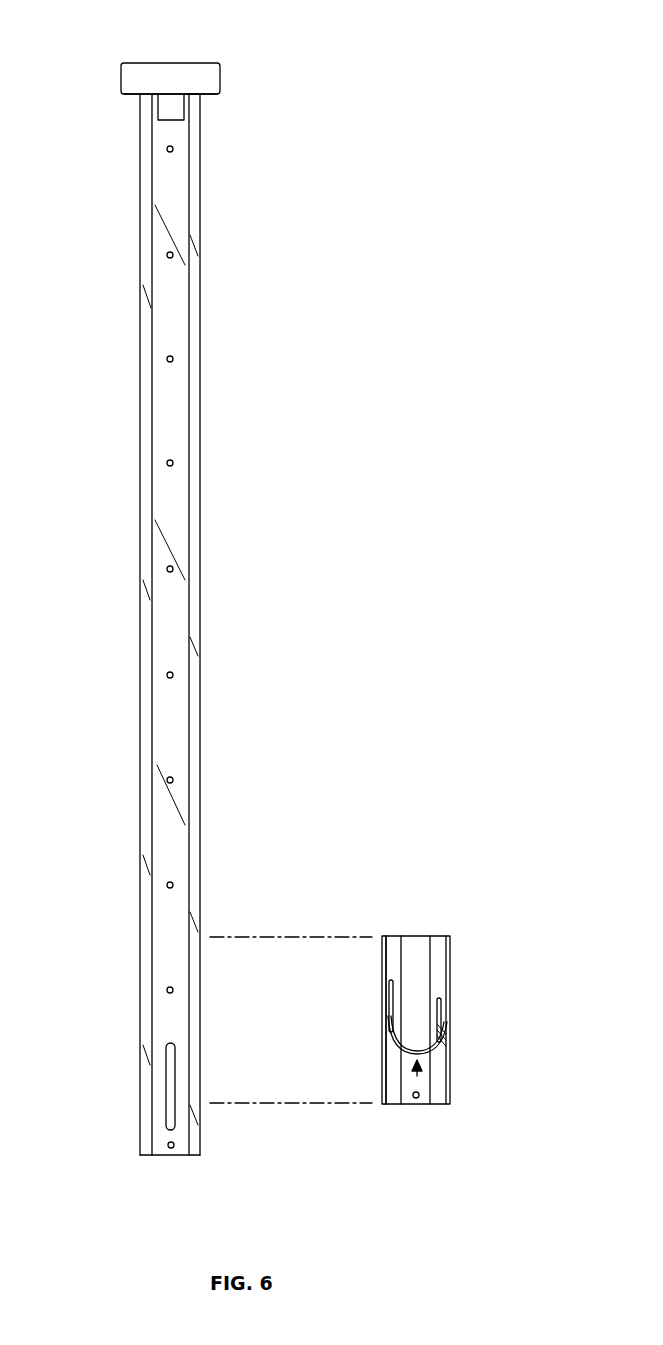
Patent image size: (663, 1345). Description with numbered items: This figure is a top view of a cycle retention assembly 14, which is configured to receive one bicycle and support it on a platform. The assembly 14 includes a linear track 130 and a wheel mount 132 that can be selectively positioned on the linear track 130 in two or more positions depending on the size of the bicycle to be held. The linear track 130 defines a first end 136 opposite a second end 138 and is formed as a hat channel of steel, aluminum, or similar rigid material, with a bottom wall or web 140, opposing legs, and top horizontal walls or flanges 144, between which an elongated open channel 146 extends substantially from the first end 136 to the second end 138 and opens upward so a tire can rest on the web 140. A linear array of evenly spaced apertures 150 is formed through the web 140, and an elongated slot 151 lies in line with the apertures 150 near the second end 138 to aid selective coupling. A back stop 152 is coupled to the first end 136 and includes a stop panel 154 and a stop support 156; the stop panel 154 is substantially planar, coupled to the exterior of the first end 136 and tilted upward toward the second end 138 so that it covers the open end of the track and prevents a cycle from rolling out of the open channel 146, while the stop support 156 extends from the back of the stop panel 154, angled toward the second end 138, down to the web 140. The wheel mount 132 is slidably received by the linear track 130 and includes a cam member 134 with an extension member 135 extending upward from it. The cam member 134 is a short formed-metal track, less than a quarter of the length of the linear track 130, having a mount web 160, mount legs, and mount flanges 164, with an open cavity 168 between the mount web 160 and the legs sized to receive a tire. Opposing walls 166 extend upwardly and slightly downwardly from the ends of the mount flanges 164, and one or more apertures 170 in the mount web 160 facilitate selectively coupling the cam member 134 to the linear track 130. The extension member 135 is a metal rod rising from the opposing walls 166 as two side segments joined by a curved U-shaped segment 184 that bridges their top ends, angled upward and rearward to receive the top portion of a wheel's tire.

The cycle retention assembly 14 is at (331, 56).
The linear track 130 is at (147, 790).
The wheel mount 132 is at (383, 1057).
The cam member 134 is at (451, 978).
The extension member 135 is at (448, 1040).
The first end 136 is at (196, 103).
The second end 138 is at (143, 1138).
The web 140 is at (172, 182).
The flanges 144 is at (145, 157).
The open channel 146 is at (174, 829).
The apertures 150 is at (166, 358).
The slot 151 is at (166, 1090).
The back stop 152 is at (141, 72).
The stop panel 154 is at (128, 85).
The stop support 156 is at (170, 106).
The mount web 160 is at (413, 966).
The mount flanges 164 is at (397, 1000).
The opposing walls 166 is at (383, 1080).
The open cavity 168 is at (421, 1076).
The apertures 170 is at (412, 1096).
The U-shaped segment 184 is at (390, 1036).